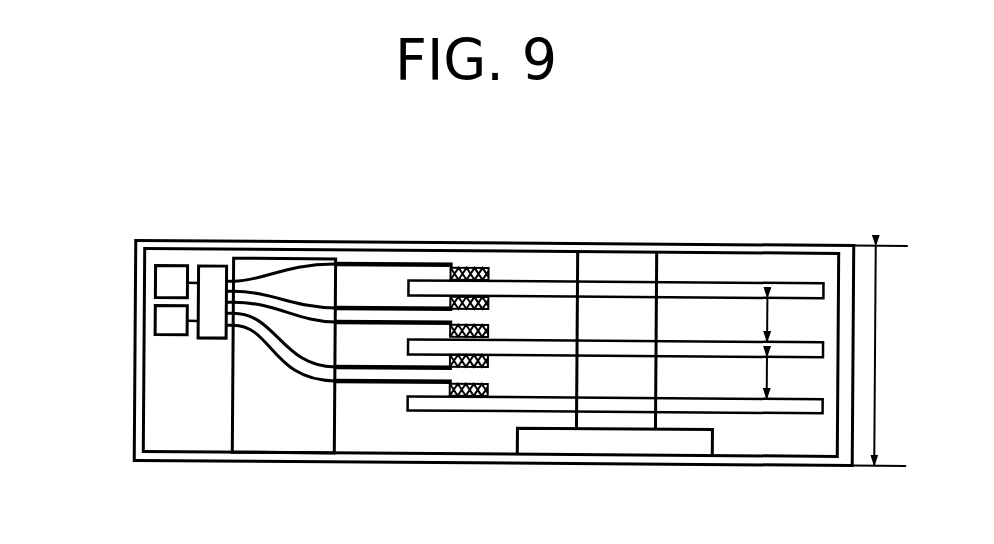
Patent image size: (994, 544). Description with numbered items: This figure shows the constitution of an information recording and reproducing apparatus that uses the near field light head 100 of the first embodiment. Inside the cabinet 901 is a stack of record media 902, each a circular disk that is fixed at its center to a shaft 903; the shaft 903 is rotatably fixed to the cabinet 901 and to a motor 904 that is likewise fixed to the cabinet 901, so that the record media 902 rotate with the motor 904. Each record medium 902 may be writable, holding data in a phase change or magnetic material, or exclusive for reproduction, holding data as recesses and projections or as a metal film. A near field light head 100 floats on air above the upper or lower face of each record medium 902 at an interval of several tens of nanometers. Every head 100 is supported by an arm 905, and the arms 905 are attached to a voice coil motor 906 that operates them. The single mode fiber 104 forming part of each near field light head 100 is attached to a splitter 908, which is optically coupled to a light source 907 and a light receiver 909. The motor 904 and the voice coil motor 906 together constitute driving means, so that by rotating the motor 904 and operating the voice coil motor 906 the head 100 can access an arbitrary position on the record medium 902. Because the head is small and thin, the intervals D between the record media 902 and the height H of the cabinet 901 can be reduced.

The near field light head 100 is at (488, 386).
The single mode fiber 104 is at (302, 276).
The cabinet 901 is at (253, 250).
The record medium 902 is at (667, 408).
The shaft 903 is at (615, 270).
The motor 904 is at (635, 443).
The arm 905 is at (397, 382).
The voice coil motor 906 is at (293, 437).
The light source 907 is at (168, 285).
The splitter 908 is at (212, 333).
The light receiver 909 is at (168, 323).